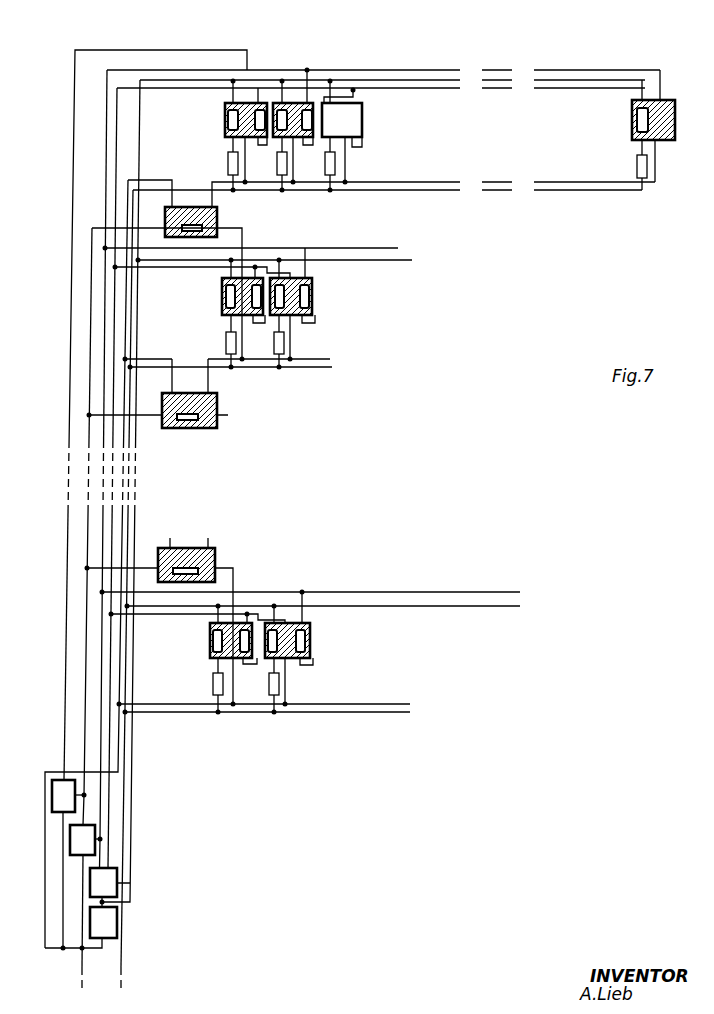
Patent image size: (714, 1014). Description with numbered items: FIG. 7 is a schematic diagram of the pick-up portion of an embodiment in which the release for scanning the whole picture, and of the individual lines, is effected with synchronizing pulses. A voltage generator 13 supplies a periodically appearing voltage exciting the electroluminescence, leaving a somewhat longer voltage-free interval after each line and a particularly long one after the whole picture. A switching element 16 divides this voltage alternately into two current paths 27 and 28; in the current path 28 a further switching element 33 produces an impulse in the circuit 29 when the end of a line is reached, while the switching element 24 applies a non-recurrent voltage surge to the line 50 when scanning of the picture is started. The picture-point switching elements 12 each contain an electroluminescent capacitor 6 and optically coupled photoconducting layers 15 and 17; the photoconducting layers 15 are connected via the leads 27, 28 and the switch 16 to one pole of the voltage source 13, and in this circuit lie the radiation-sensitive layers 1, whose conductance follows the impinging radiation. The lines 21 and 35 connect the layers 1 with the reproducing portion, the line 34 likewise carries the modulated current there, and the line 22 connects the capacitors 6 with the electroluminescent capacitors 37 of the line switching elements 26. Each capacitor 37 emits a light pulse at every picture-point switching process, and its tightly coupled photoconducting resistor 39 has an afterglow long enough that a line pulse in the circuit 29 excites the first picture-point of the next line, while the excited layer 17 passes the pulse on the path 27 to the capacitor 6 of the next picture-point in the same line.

The radiation-sensitive layer 1 is at (228, 163).
The electroluminescent capacitor 6 is at (229, 109).
The picture-point switching element 12 is at (228, 131).
The voltage generator 13 is at (105, 922).
The photoconducting layer 15 is at (226, 119).
The switching element 16 is at (105, 881).
The photoconducting layer 17 is at (283, 100).
The line 21 is at (352, 190).
The line 22 is at (378, 182).
The switching element 24 is at (62, 793).
The line switching element 26 is at (165, 216).
The current path 27 is at (125, 88).
The current path 28 is at (195, 70).
The circuit 29 is at (91, 257).
The switching element 33 is at (80, 839).
The line 34 is at (82, 957).
The line 35 is at (121, 975).
The electroluminescent capacitor 37 is at (217, 212).
The photoconducting resistor 39 is at (162, 80).
The line 50 is at (225, 50).